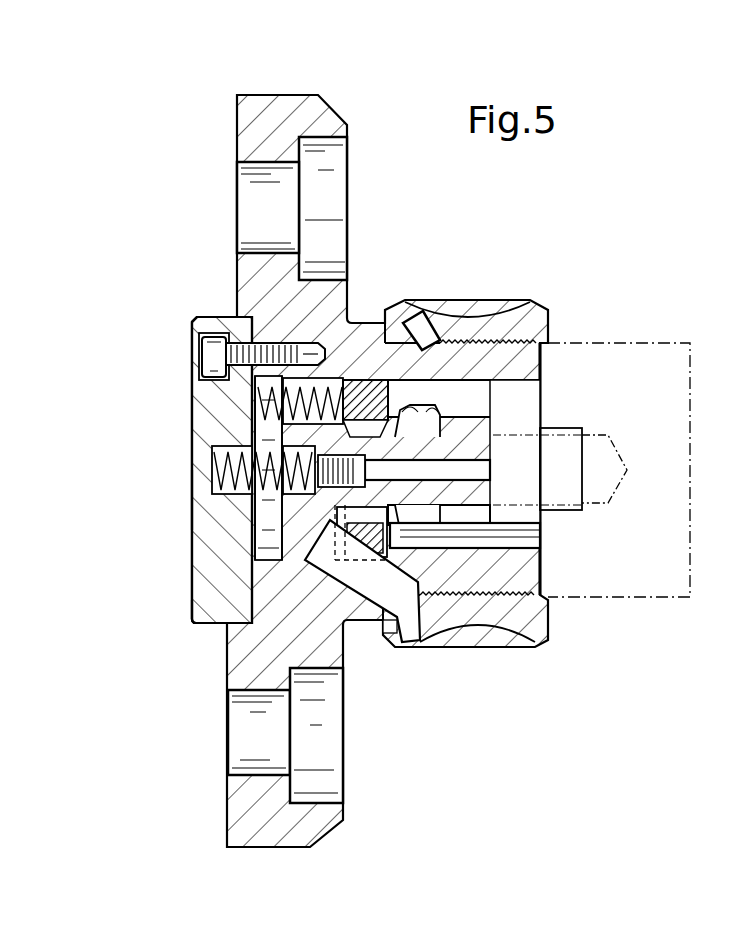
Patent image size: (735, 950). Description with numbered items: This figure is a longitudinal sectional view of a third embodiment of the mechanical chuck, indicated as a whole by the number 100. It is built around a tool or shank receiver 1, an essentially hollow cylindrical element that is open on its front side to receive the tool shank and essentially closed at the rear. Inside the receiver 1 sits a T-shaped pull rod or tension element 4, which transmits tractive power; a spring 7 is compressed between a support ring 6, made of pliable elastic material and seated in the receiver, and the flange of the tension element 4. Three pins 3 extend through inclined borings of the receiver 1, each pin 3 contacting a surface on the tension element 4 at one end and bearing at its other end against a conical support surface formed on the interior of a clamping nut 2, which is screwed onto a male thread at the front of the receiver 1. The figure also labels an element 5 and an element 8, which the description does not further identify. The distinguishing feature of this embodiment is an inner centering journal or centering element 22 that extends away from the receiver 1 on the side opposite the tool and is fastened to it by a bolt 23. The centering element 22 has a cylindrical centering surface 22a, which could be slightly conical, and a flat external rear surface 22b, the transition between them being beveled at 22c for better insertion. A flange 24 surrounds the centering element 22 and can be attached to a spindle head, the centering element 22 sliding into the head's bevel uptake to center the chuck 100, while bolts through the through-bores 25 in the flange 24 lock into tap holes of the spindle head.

The tool or shank receiver 1 is at (312, 93).
The clamping nut 2 is at (533, 328).
The pin 3 is at (210, 602).
The pull rod or tension element 4 is at (470, 440).
The ring 5 is at (425, 415).
The support ring 6 is at (367, 380).
The spring 7 is at (214, 448).
The plunger 8 is at (215, 505).
The inner centering journal or element 22 is at (215, 392).
The cylindrical centering surface 22a is at (211, 317).
The flat external rear surface 22b is at (213, 499).
The bevel 22c is at (192, 627).
The bolt 23 is at (196, 345).
The flange 24 is at (236, 148).
The through-bores 25 is at (250, 226).
The mechanical chuck 100 is at (481, 668).